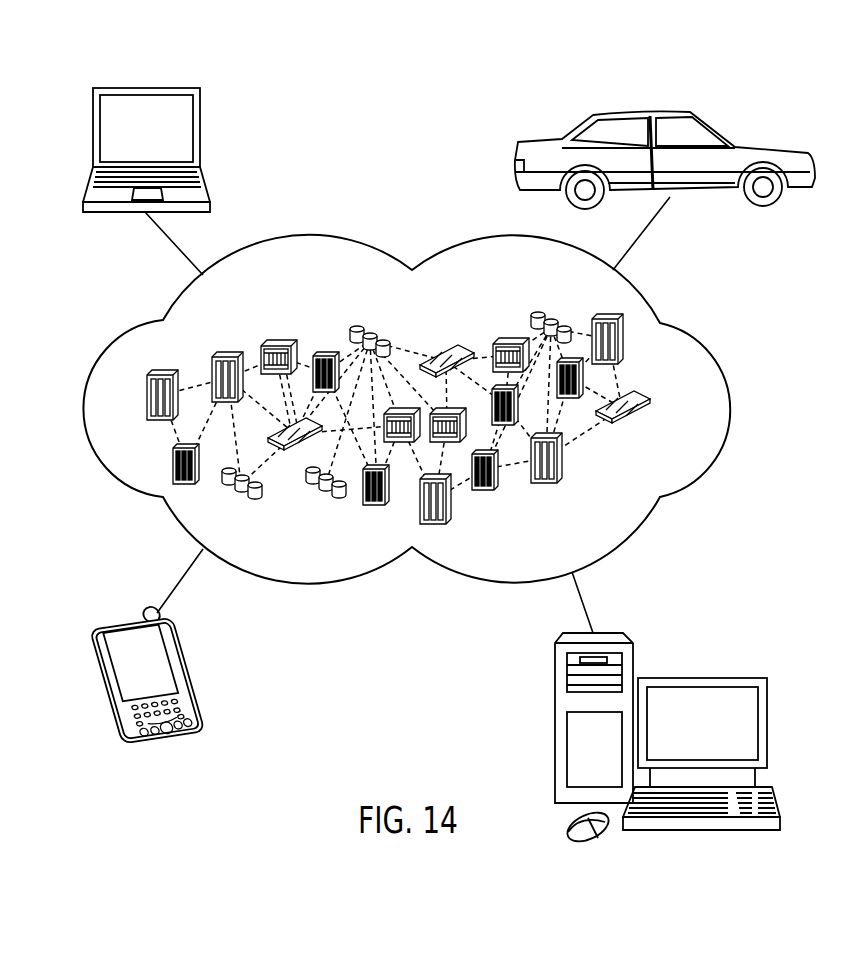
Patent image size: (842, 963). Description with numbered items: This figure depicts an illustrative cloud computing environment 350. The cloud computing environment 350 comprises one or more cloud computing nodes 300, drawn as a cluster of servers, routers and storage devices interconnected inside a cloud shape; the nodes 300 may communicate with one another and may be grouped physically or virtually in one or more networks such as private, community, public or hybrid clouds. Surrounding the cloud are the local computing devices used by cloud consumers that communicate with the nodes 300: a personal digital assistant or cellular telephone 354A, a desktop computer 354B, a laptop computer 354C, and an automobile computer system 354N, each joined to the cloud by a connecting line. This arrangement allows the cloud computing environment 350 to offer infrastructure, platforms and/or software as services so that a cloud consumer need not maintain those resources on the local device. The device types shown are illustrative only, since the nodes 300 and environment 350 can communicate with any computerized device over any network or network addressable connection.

The laptop computer 354C is at (147, 87).
The automobile computer system 354N is at (643, 110).
The cloud computing environment 350 is at (717, 326).
The cloud computing nodes 300 is at (657, 408).
The personal digital assistant (PDA) or cellular telephone 354A is at (130, 622).
The desktop computer 354B is at (702, 677).